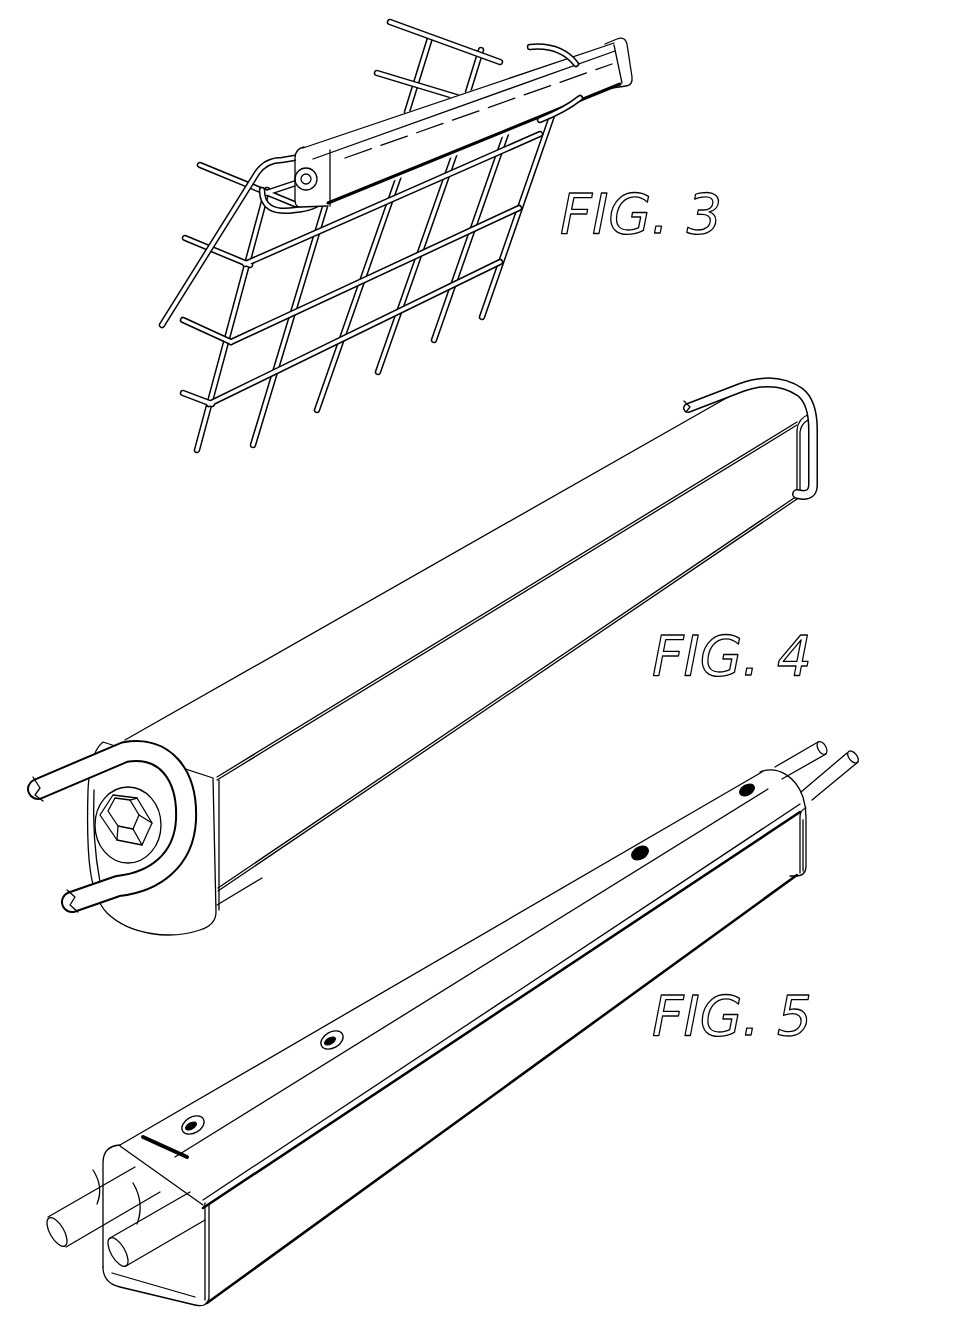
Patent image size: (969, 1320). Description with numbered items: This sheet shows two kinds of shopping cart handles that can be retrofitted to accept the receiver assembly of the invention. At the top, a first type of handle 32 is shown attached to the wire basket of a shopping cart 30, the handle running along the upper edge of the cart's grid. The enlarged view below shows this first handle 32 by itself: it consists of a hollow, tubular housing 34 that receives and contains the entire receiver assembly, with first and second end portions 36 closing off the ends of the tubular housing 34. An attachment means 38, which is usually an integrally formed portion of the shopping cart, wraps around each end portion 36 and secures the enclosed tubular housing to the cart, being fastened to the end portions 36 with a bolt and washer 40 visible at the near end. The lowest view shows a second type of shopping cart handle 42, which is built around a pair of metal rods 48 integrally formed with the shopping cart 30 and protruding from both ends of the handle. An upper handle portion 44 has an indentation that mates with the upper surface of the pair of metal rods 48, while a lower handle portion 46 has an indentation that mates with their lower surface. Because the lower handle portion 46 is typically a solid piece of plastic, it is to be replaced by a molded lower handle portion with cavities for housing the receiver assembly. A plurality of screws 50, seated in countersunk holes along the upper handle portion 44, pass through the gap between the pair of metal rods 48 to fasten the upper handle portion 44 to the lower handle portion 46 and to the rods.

In FIG. 3, the shopping cart 30 is at (452, 50).
In FIG. 3, the first type of handle 32 is at (648, 75).
In FIG. 4, the first type of handle 32 is at (426, 647).
In FIG. 4, the tubular housing 34 is at (512, 668).
In FIG. 4, the end portions 36 is at (197, 916).
In FIG. 4, the attachment means 38 is at (788, 380).
In FIG. 4, the bolt and washer 40 is at (118, 832).
In FIG. 5, the second type of shopping cart handle 42 is at (449, 1023).
In FIG. 5, the upper handle portion 44 is at (456, 962).
In FIG. 5, the lower handle portion 46 is at (378, 1152).
In FIG. 5, the metal rods 48 is at (97, 1177).
In FIG. 5, the screws 50 is at (322, 1038).